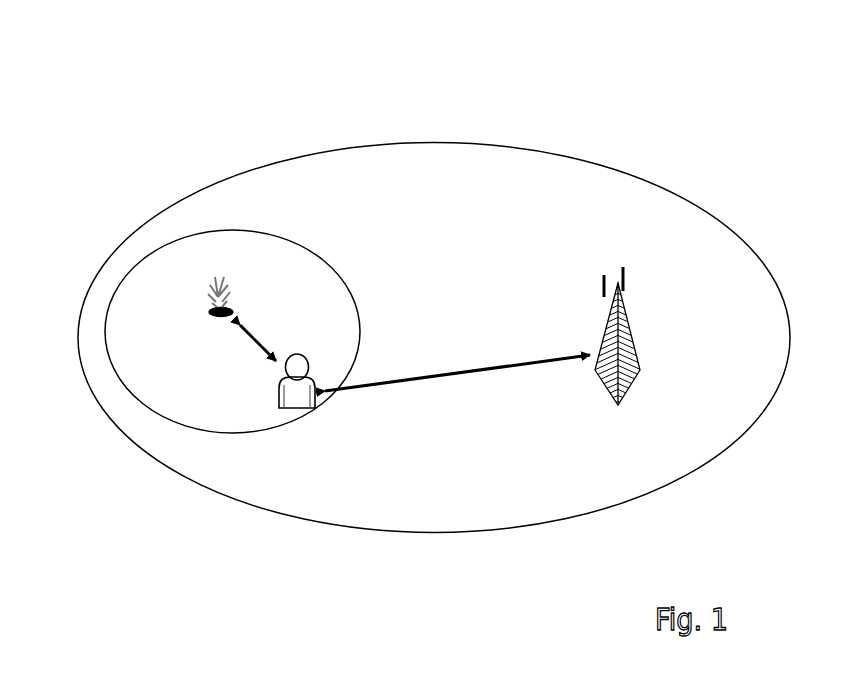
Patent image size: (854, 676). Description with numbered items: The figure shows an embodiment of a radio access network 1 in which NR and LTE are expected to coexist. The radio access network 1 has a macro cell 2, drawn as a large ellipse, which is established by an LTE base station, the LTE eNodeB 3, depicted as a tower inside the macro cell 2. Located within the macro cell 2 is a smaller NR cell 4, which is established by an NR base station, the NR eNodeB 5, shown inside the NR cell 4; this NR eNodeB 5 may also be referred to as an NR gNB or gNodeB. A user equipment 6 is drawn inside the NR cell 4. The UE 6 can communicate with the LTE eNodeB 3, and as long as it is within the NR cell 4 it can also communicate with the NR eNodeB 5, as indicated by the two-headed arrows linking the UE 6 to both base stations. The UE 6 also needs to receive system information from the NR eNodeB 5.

The radio access network 1 is at (538, 104).
The macro cell 2 is at (425, 142).
The LTE eNodeB 3 is at (624, 322).
The NR cell 4 is at (300, 243).
The NR eNodeB 5 is at (238, 284).
The user equipment 6 is at (302, 356).